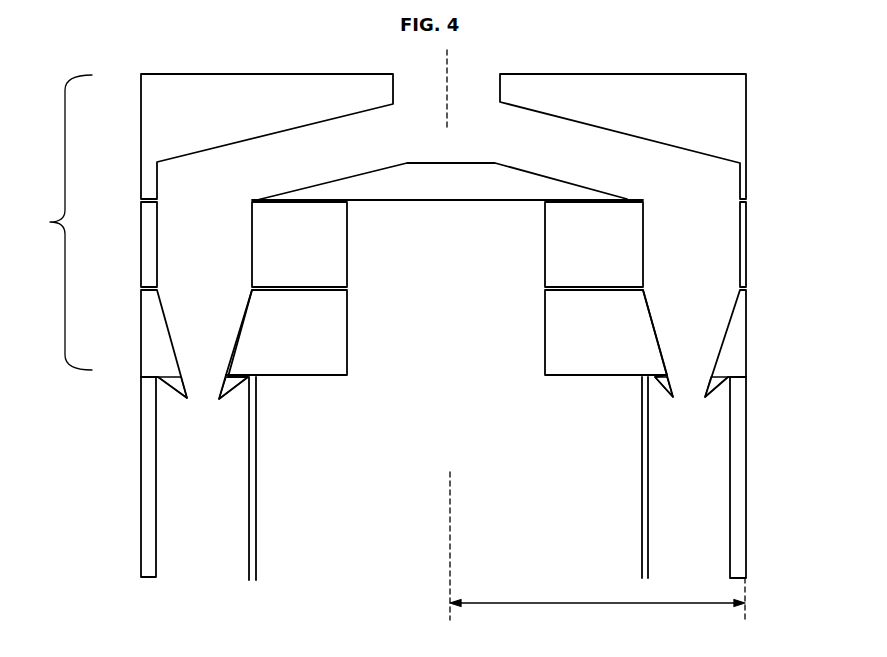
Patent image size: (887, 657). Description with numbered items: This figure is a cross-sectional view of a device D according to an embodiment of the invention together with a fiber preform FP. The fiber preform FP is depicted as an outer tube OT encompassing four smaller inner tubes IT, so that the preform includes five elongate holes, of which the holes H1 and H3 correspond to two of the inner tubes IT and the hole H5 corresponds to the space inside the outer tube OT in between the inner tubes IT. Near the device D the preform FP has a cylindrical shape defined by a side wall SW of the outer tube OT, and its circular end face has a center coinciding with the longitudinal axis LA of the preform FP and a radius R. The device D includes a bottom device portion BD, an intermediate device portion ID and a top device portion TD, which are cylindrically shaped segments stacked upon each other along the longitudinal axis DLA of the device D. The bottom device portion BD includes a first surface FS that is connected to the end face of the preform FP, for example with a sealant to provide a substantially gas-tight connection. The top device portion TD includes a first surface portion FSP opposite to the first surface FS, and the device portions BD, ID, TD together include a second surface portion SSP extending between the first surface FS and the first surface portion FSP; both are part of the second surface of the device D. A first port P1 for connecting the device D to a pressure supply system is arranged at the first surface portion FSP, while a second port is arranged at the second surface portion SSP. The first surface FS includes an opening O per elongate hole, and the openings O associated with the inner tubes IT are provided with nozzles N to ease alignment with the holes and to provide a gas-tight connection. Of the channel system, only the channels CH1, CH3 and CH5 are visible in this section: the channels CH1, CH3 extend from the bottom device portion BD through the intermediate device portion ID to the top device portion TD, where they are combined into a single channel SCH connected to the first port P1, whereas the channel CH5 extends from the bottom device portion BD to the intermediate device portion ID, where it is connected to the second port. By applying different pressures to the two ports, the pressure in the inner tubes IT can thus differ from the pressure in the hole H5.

The device D is at (50, 222).
The top device portion TD is at (153, 112).
The intermediate device portion ID is at (147, 245).
The bottom device portion BD is at (150, 330).
The single channel SCH is at (469, 135).
The first surface FS is at (308, 388).
The nozzle N is at (179, 391).
The opening O is at (205, 409).
The fiber preform FP is at (142, 497).
The inner tube IT is at (256, 515).
The side wall SW is at (756, 442).
The outer tube OT is at (746, 522).
The second surface portion SSP is at (761, 249).
The first surface portion FSP is at (678, 62).
The first port P1 is at (410, 78).
The longitudinal axis of the device DLA is at (450, 80).
The longitudinal axis of the preform LA is at (450, 528).
The radius R is at (597, 599).
The channel CH1 is at (180, 318).
The channel CH3 is at (708, 326).
The channel CH5 is at (461, 306).
The elongate hole H1 is at (205, 551).
The elongate hole H3 is at (661, 511).
The elongate hole H5 is at (341, 552).